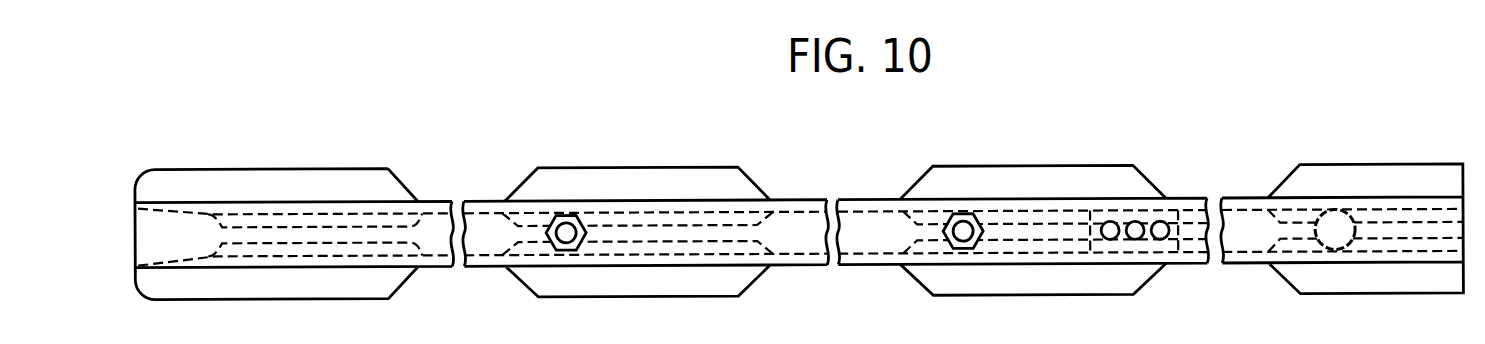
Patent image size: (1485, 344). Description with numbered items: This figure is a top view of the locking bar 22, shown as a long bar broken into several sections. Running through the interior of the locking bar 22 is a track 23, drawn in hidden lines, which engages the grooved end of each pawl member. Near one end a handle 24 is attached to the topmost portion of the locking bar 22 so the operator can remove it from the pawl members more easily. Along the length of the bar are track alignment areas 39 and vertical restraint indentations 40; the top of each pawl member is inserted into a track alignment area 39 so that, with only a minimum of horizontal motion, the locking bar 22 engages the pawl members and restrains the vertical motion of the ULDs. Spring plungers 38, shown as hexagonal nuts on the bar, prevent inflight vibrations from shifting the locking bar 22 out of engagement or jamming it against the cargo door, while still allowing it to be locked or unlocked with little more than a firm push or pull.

The locking bar 22 is at (1103, 138).
The track 23 is at (394, 227).
The handle 24 is at (1347, 212).
The spring plunger 38 is at (575, 217).
The track alignment area 39 is at (803, 220).
The vertical restraint indentation 40 is at (868, 190).